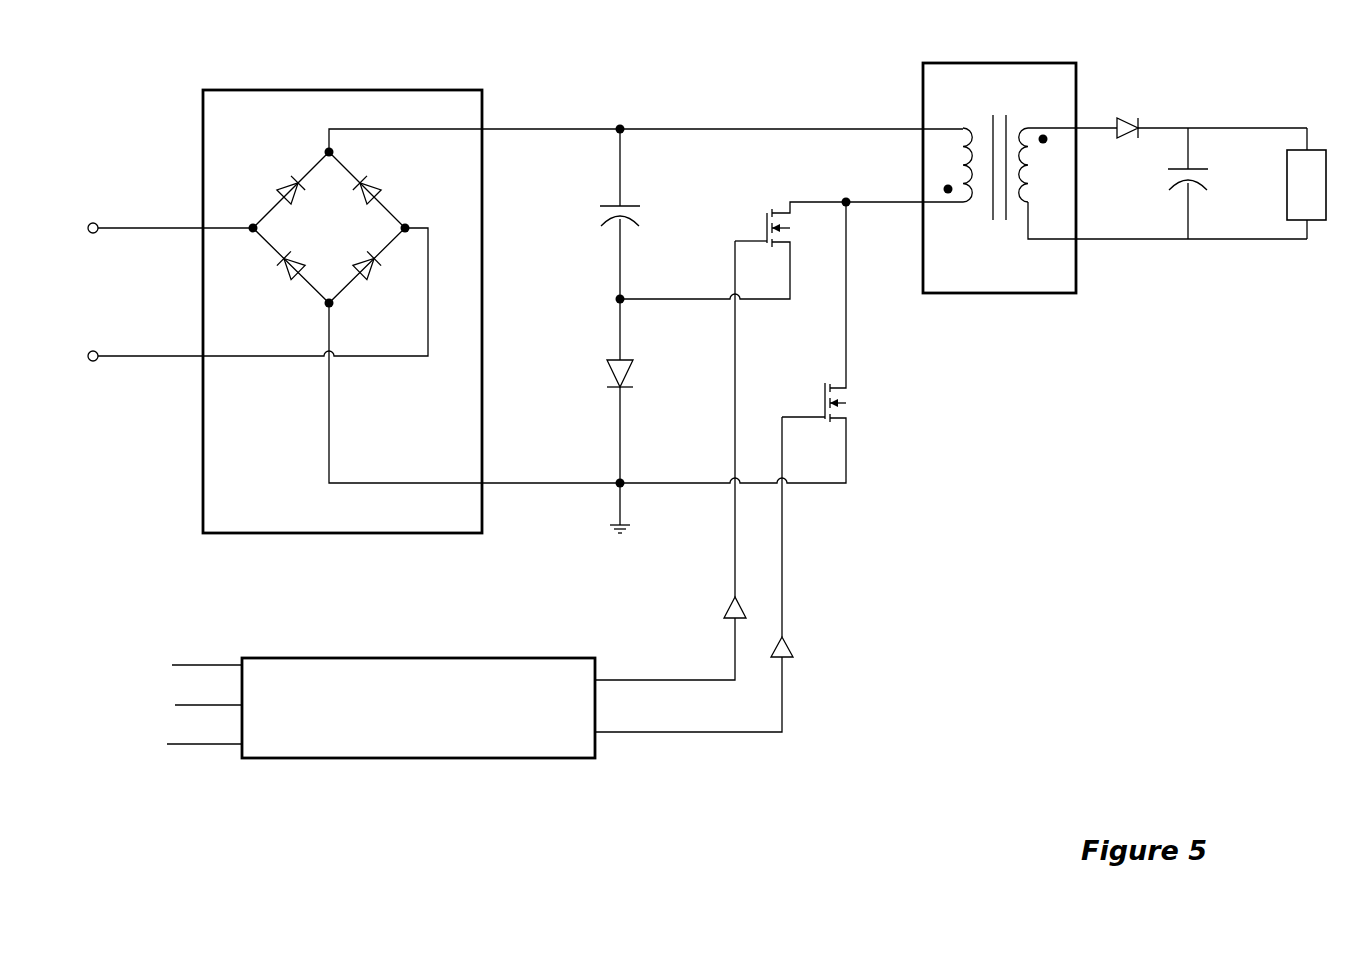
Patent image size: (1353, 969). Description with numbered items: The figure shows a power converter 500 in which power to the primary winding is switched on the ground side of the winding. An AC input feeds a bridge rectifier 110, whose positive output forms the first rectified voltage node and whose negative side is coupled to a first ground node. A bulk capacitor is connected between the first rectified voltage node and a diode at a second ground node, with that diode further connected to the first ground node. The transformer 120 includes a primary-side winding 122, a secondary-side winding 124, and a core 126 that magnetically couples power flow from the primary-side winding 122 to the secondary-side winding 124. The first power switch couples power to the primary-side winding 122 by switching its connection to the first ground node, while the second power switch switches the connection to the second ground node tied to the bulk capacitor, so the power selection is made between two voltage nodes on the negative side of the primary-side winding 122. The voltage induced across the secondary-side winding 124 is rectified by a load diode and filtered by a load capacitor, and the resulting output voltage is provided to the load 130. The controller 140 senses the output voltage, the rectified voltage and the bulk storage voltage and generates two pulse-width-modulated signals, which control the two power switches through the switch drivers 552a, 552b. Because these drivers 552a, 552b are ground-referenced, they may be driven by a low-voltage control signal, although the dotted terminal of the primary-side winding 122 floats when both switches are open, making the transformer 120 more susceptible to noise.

The power converter 500 is at (1227, 425).
The bridge rectifier 110 is at (519, 294).
The transformer 120 is at (1115, 162).
The primary-side winding 122 is at (956, 148).
The secondary-side winding 124 is at (1163, 166).
The core 126 is at (1001, 184).
The load 130 is at (1319, 172).
The controller 140 is at (358, 693).
The switch driver 552a is at (719, 574).
The switch driver 552b is at (670, 460).